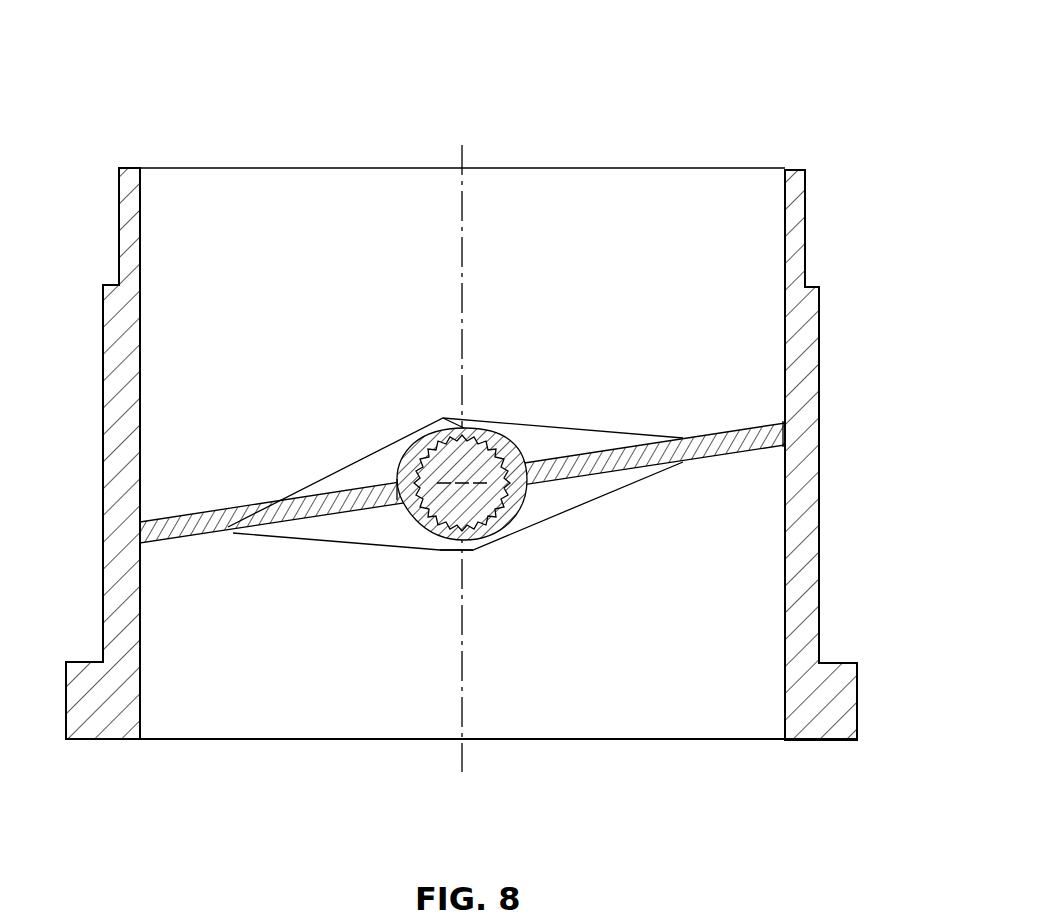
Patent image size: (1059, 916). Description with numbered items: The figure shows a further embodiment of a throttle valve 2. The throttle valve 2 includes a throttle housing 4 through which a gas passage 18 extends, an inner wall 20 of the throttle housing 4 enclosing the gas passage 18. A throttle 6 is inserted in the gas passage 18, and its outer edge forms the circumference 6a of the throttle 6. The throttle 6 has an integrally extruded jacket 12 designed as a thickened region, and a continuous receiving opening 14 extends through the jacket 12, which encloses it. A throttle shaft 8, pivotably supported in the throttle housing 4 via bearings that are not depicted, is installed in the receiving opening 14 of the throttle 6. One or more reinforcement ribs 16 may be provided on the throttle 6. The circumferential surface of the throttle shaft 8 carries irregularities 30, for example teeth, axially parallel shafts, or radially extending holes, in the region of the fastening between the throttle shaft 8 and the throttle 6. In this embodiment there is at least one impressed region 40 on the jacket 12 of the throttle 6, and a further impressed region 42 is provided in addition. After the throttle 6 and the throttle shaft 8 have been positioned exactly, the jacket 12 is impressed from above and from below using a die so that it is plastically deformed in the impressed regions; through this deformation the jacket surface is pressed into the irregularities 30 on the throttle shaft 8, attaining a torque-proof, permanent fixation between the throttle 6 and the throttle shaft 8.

The throttle valve 2 is at (647, 115).
The throttle housing 4 is at (130, 218).
The throttle 6 is at (183, 528).
The circumference 6a is at (783, 433).
The throttle shaft 8 is at (494, 440).
The jacket 12 is at (513, 532).
The receiving opening 14 is at (385, 452).
The reinforcement rib 16 is at (588, 488).
The gas passage 18 is at (688, 697).
The inner wall 20 is at (140, 675).
The irregularities 30 is at (407, 508).
The impressed region 40 is at (458, 428).
The further impressed region 42 is at (474, 540).